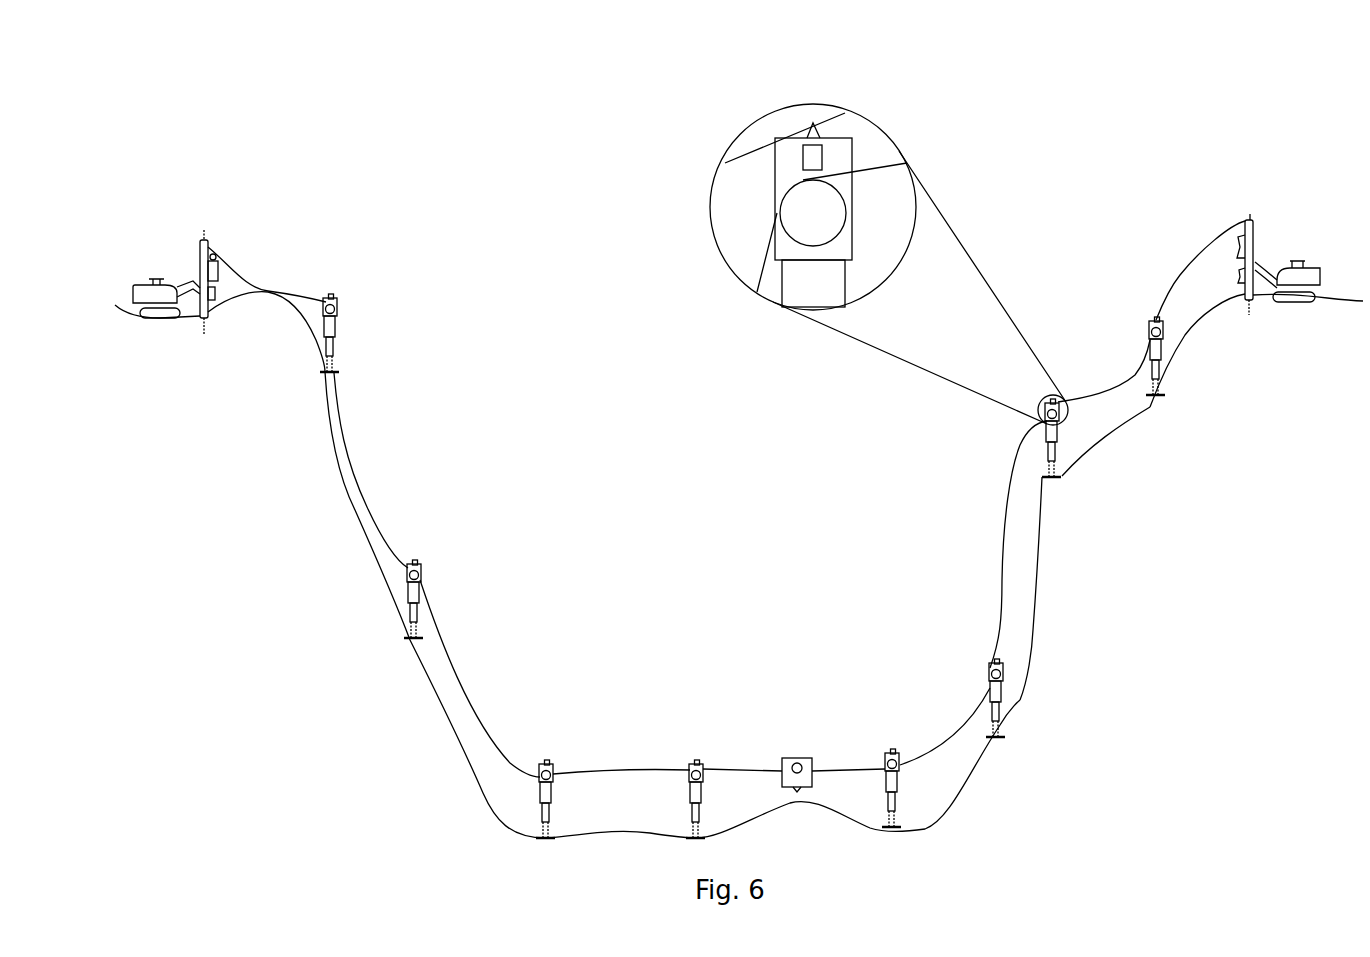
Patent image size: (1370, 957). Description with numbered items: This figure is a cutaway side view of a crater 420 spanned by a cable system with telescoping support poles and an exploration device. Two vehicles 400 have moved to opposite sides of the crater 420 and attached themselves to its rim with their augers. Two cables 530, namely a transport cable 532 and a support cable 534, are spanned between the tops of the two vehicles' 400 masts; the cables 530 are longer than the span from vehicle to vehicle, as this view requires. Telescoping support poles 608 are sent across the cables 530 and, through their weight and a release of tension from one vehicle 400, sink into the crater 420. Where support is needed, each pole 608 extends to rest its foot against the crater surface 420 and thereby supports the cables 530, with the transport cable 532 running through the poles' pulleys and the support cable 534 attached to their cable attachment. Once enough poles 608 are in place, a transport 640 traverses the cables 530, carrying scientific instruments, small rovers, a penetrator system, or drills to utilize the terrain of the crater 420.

The vehicle 400 is at (203, 244).
The crater 420 is at (1037, 573).
The cables 530 is at (1005, 560).
The transport cable 532 is at (762, 272).
The support cable 534 is at (838, 110).
The telescoping support pole 608 is at (1062, 477).
The transport 640 is at (783, 757).